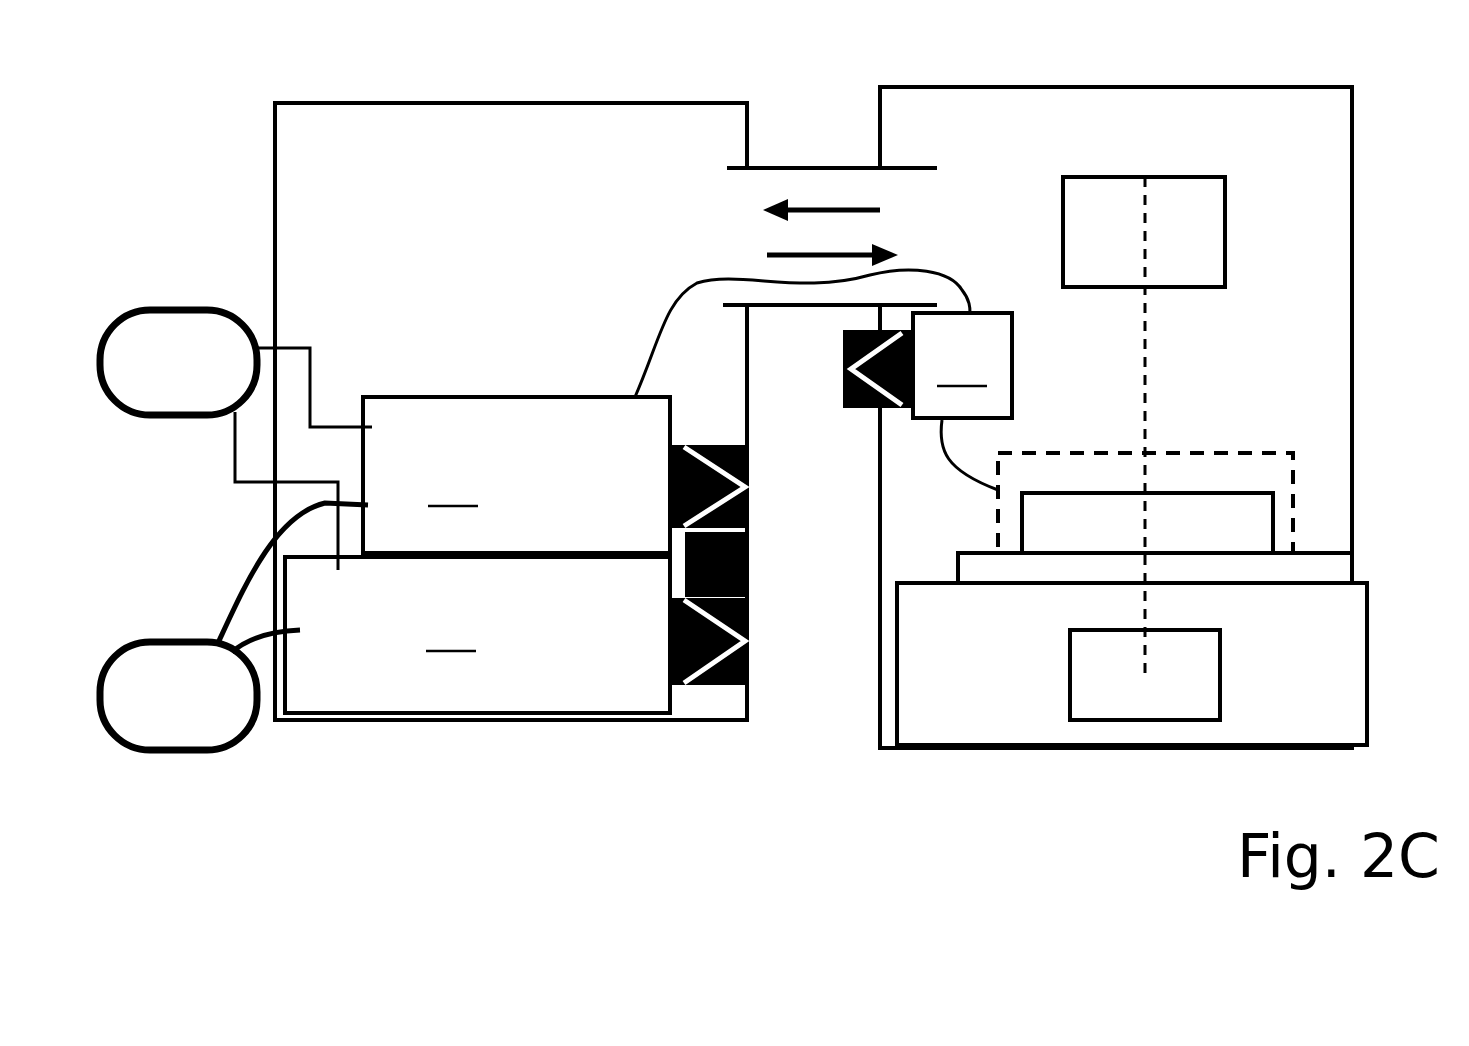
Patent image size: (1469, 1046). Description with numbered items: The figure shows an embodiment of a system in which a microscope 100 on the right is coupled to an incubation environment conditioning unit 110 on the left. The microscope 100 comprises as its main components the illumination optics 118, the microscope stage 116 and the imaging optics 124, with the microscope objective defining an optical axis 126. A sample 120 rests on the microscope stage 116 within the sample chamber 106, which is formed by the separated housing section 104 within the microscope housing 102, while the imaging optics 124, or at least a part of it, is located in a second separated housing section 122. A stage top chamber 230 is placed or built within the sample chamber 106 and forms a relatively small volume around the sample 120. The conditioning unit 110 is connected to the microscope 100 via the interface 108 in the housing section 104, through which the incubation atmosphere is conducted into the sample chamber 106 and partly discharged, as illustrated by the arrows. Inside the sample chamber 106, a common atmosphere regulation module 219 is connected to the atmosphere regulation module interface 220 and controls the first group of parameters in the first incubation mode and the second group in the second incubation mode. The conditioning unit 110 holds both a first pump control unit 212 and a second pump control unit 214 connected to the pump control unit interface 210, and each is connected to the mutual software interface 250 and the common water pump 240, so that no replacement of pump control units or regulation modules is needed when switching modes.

The microscope 100 is at (875, 98).
The microscope housing 102 is at (1352, 138).
The separated housing section 104 is at (1283, 390).
The sample chamber 106 is at (1313, 130).
The interface 108 is at (768, 193).
The incubation environment conditioning unit 110 is at (306, 182).
The microscope stage 116 is at (1310, 570).
The illumination optics 118 is at (1225, 257).
The sample 120 is at (1262, 518).
The second separated housing section 122 is at (1368, 708).
The imaging optics 124 is at (1205, 693).
The optical axis 126 is at (1147, 350).
The pump control unit interface 210 is at (749, 583).
The first pump control unit 212 is at (477, 635).
The second pump control unit 214 is at (516, 475).
The common atmosphere regulation module 219 is at (823, 380).
The atmosphere regulation module interface 220 is at (843, 412).
The stage top chamber 230 is at (1275, 477).
The common water pump 240 is at (137, 655).
The mutual software interface 250 is at (158, 323).